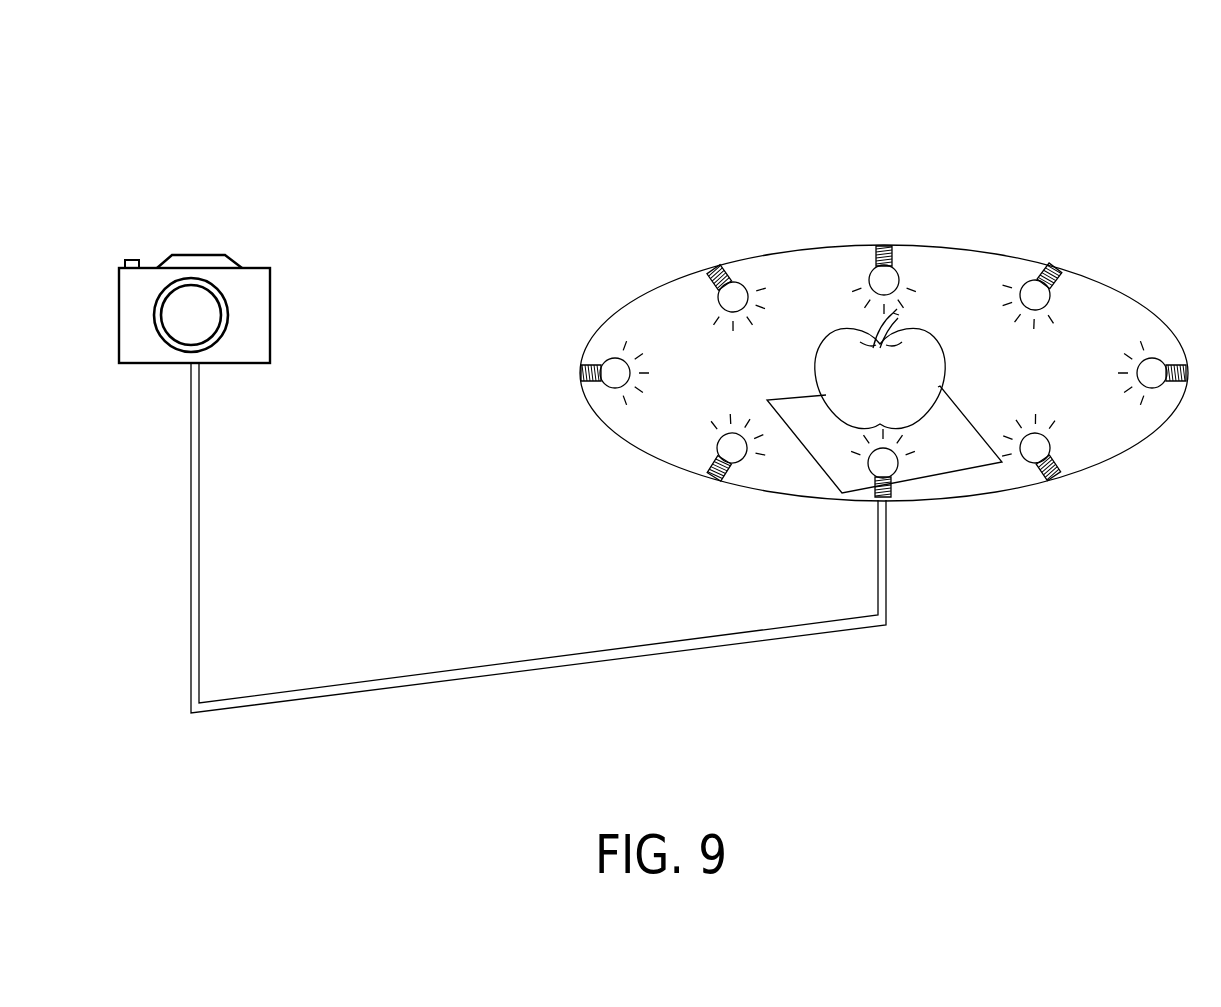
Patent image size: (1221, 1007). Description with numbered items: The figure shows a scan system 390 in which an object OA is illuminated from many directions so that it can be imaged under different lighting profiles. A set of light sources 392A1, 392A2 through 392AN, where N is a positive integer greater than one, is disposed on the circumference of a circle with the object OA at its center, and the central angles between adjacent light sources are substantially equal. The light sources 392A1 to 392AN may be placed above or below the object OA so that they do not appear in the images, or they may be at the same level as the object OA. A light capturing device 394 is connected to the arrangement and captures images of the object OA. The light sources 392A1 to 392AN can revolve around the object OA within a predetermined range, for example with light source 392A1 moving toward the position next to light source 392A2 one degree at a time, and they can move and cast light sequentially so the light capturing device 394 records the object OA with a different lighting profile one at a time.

The scan system 390 is at (1110, 95).
The light capturing device 394 is at (258, 262).
The light source 392A1 is at (743, 463).
The light source 392A2 is at (611, 358).
The light source 392AN is at (895, 483).
The object OA is at (946, 331).